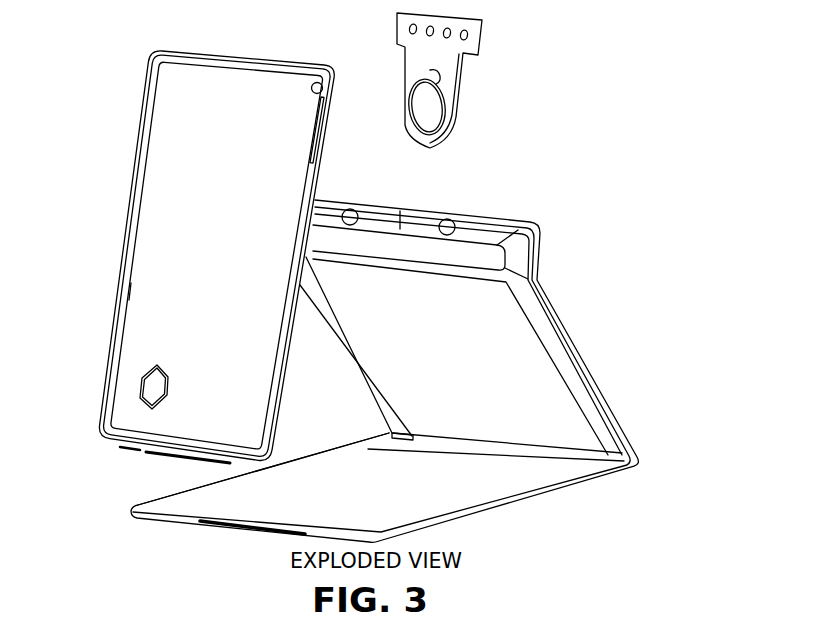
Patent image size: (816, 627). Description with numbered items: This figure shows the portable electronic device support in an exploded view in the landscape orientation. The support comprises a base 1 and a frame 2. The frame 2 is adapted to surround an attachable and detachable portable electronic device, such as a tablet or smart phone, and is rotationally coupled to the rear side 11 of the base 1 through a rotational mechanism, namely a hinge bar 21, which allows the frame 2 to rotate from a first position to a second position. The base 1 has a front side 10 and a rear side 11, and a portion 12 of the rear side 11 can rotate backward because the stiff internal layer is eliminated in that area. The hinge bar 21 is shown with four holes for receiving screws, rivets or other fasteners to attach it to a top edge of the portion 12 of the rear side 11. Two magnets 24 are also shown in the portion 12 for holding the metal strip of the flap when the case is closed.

The base 1 is at (389, 347).
The frame 2 is at (170, 162).
The front side 10 is at (380, 487).
The rear side 11 is at (445, 366).
The portion 12 is at (521, 238).
The hinge bar 21 is at (448, 63).
The magnets 24 is at (352, 211).